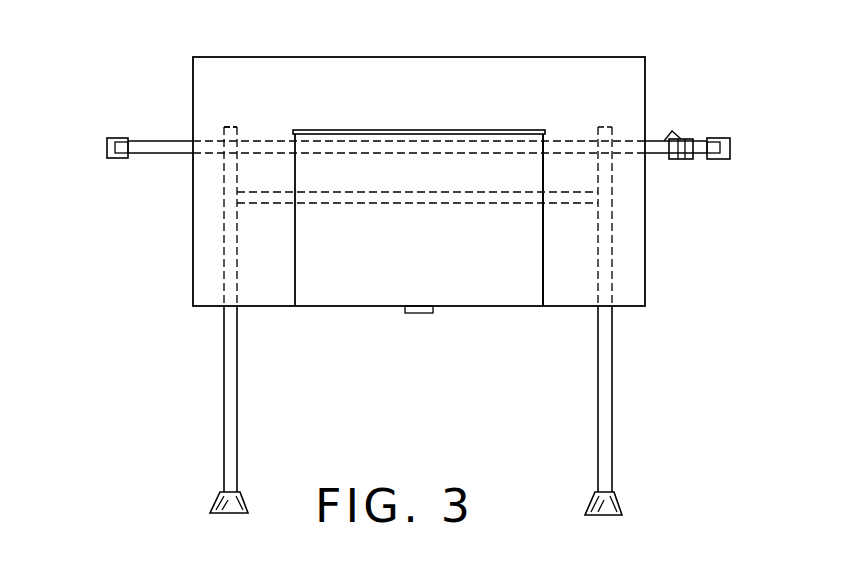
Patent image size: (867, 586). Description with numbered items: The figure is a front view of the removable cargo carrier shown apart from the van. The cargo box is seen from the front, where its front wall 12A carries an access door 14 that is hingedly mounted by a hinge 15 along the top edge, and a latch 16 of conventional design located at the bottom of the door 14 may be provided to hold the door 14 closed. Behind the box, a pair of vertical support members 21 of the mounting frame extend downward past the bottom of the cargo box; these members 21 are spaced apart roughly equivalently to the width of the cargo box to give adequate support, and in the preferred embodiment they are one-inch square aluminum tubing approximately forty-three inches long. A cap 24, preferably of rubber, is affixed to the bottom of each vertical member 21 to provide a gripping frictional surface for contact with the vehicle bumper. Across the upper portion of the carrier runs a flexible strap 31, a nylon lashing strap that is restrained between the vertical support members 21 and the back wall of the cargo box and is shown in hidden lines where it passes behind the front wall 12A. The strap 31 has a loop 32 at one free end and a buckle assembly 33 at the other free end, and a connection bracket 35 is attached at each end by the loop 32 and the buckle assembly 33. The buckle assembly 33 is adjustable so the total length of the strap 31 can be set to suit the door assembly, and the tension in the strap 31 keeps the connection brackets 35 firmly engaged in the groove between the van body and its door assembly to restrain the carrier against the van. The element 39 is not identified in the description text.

The front wall 12A is at (552, 259).
The access door 14 is at (437, 256).
The hinge 15 is at (405, 130).
The latch 16 is at (425, 315).
The vertical support members 21 is at (228, 379).
The cap 24 is at (220, 500).
The flexible strap 31 is at (252, 130).
The loop 32 is at (158, 148).
The buckle assembly 33 is at (683, 160).
The connection bracket 35 is at (105, 148).
The lower rod 39 is at (277, 202).